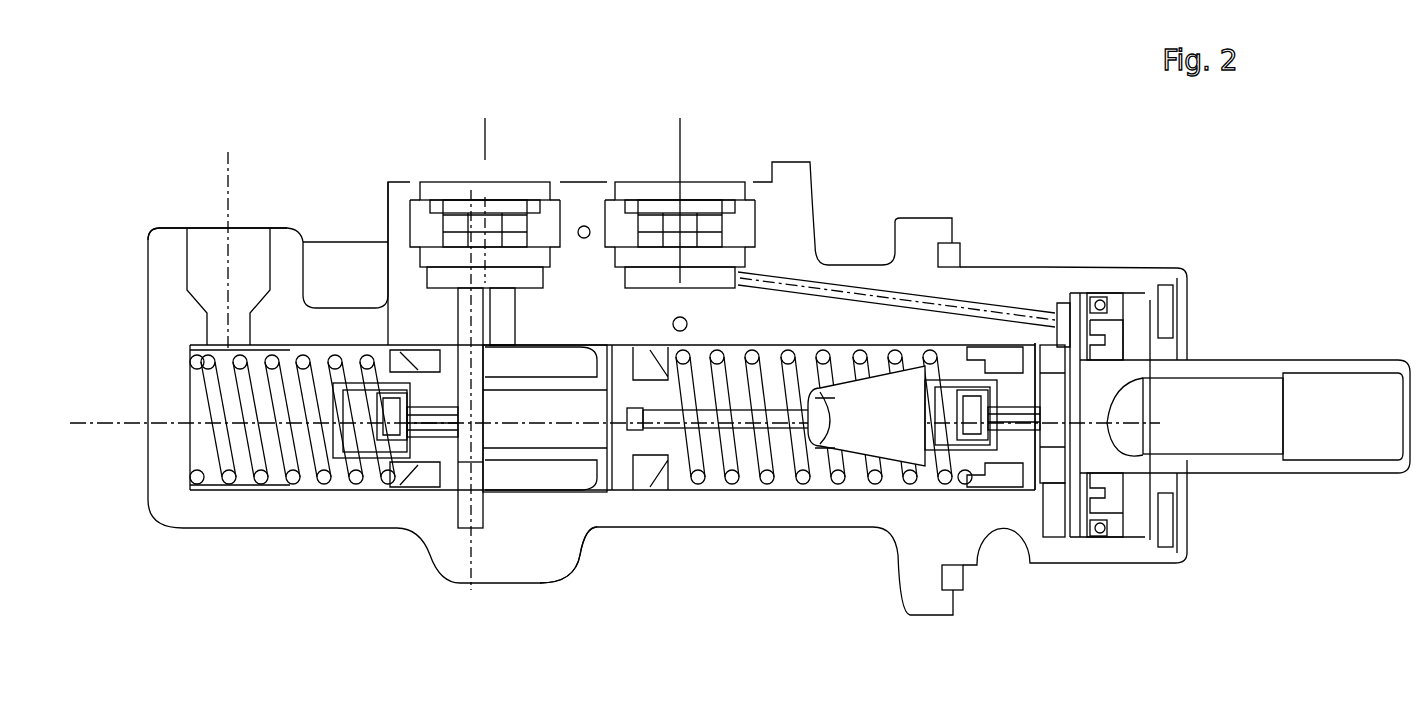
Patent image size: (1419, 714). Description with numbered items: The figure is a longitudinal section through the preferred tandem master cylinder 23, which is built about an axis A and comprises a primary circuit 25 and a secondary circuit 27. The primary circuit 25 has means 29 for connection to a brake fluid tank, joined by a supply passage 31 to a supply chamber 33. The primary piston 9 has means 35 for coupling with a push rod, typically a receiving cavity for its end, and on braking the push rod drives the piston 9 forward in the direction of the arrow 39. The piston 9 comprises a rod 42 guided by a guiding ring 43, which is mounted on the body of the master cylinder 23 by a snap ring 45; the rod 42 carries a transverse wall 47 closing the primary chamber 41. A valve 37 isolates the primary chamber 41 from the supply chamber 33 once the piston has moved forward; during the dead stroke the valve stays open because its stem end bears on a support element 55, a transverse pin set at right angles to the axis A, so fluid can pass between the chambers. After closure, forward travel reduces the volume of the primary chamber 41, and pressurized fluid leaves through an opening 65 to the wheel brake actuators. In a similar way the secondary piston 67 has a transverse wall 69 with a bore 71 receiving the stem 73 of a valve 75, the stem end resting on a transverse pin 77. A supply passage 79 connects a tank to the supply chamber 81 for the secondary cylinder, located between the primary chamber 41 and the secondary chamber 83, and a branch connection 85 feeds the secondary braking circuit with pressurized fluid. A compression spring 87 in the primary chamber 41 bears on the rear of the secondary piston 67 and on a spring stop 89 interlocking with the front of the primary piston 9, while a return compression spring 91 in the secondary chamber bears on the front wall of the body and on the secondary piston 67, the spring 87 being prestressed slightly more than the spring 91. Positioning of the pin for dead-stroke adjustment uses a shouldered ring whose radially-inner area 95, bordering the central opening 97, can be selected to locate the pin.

The tandem master cylinder 23 is at (943, 126).
The primary piston 9 is at (1271, 490).
The primary circuit 25 is at (826, 499).
The secondary circuit 27 is at (312, 509).
The means for the connection to a brake fluid tank 29 is at (693, 180).
The supply passage 31 is at (1013, 310).
The supply chamber 33 is at (1062, 307).
The means for the coupling with a push rod 35 is at (1202, 430).
The valve 37 is at (1015, 395).
The arrow 39 is at (1320, 420).
The primary chamber 41 is at (752, 478).
The rod 42 is at (1163, 360).
The guiding ring 43 is at (1146, 330).
The snap ring 45 is at (1190, 530).
The transverse wall 47 is at (1030, 493).
The support element 55 is at (1040, 488).
The opening 65 is at (685, 318).
The secondary piston 67 is at (450, 503).
The transverse wall 69 is at (443, 388).
The bore 71 is at (427, 480).
The stem 73 is at (377, 347).
The valve 75 is at (382, 458).
The transverse pin 77 is at (487, 512).
The supply passage 79 is at (517, 315).
The supply chamber 81 is at (573, 483).
The secondary chamber 83 is at (240, 484).
The branch connection 85 is at (207, 237).
The compression spring 87 is at (762, 478).
The spring stop 89 is at (895, 462).
The return compression spring 91 is at (266, 490).
The radially-inner area 95 is at (1062, 493).
The central opening 97 is at (1080, 458).
The axis A is at (130, 425).